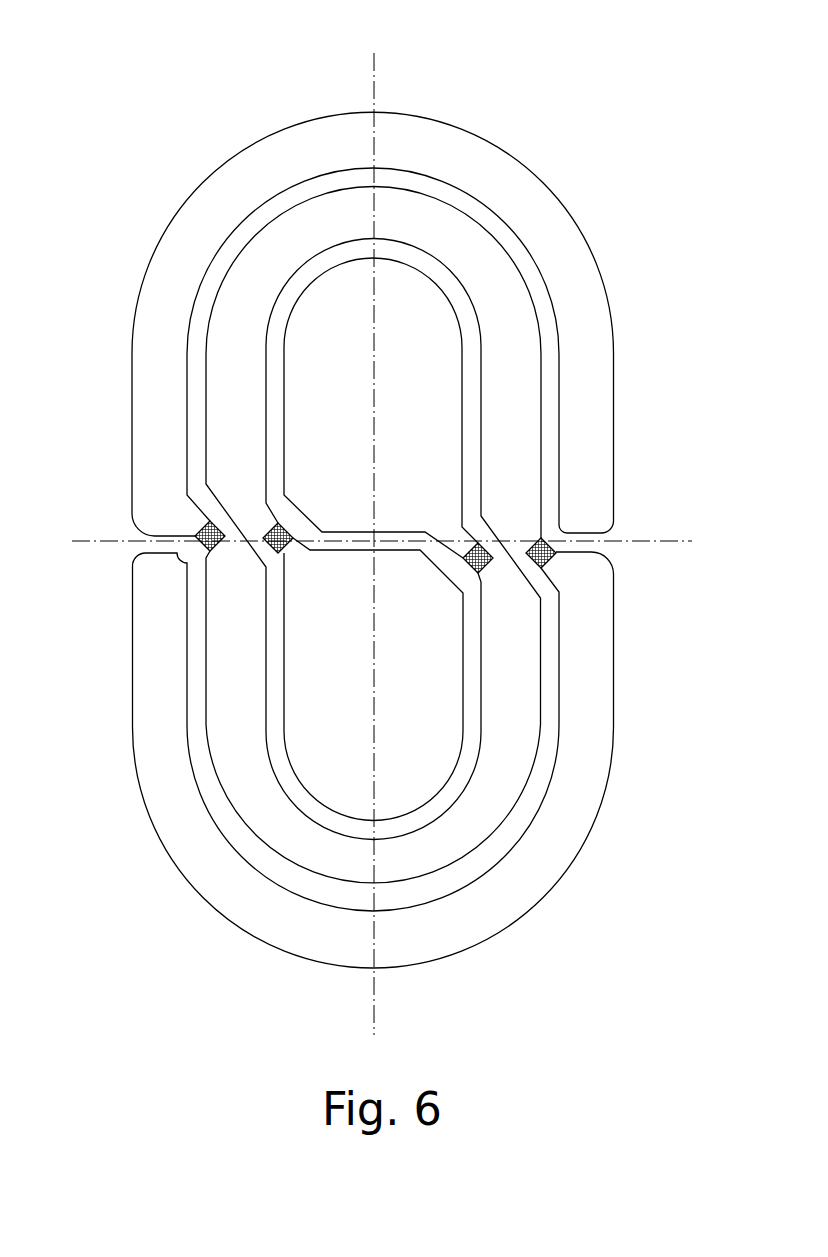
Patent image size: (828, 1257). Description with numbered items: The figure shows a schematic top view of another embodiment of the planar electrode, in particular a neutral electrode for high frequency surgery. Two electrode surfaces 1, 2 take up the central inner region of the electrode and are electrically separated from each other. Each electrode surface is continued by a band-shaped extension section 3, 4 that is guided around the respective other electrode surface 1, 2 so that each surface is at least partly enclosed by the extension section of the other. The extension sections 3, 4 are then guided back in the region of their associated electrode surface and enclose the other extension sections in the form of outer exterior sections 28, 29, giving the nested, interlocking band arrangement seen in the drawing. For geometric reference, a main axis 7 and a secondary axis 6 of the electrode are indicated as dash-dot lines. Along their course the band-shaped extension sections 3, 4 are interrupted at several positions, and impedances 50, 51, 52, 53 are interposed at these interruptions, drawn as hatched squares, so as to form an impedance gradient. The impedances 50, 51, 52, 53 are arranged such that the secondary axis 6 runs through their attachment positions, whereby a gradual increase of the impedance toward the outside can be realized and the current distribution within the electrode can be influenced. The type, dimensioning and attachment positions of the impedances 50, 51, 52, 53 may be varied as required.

The electrode surface 1 is at (380, 432).
The electrode surface 2 is at (380, 692).
The band-shaped extension section 3 is at (478, 835).
The band-shaped extension section 4 is at (495, 290).
The secondary axis 6 is at (668, 541).
The main axis 7 is at (373, 72).
The exterior section 28 is at (470, 172).
The exterior section 29 is at (445, 930).
The impedance 50 is at (556, 553).
The impedance 51 is at (263, 538).
The impedance 52 is at (493, 558).
The impedance 53 is at (195, 536).